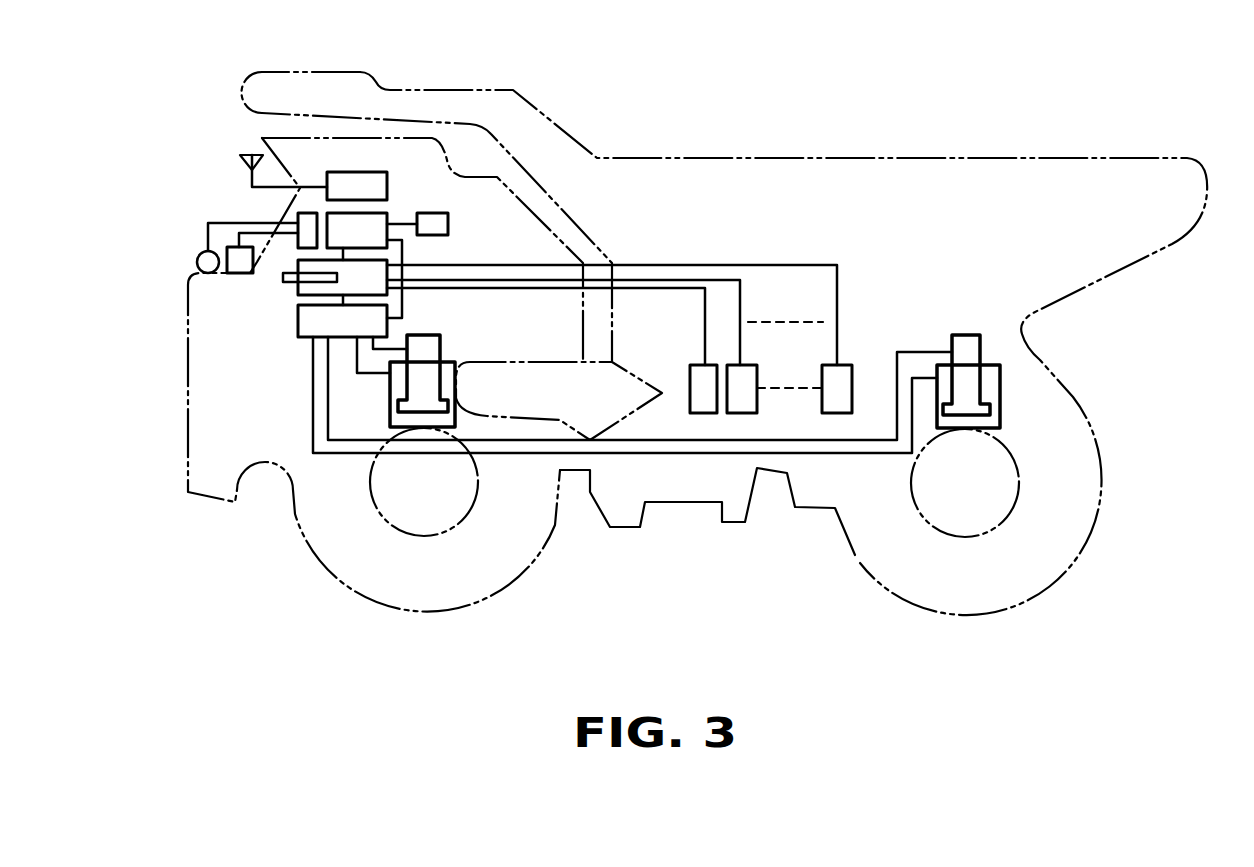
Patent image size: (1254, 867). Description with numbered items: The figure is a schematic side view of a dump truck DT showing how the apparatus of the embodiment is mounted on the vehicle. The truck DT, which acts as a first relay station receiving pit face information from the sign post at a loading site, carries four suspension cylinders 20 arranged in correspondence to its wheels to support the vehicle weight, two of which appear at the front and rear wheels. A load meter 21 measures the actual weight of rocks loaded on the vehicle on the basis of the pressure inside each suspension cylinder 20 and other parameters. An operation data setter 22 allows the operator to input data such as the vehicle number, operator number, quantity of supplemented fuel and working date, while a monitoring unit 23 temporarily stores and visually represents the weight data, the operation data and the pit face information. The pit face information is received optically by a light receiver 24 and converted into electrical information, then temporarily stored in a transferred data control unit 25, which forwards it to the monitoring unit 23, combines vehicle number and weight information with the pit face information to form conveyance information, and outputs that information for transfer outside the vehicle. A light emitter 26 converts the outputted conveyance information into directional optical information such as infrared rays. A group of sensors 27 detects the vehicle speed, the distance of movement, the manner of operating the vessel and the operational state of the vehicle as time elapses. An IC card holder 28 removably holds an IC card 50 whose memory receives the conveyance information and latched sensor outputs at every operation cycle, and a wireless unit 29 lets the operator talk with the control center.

The dump truck DT is at (178, 152).
The suspension cylinder 20 is at (453, 362).
The load meter 21 is at (308, 328).
The operation data setter 22 is at (448, 225).
The monitoring unit 23 is at (387, 215).
The light receiver 24 is at (240, 275).
The transferred data control unit 25 is at (297, 223).
The light emitter 26 is at (197, 261).
The group of sensors 27 is at (860, 352).
The IC card holder 28 is at (297, 294).
The wireless unit 29 is at (360, 172).
The IC card 50 is at (281, 276).